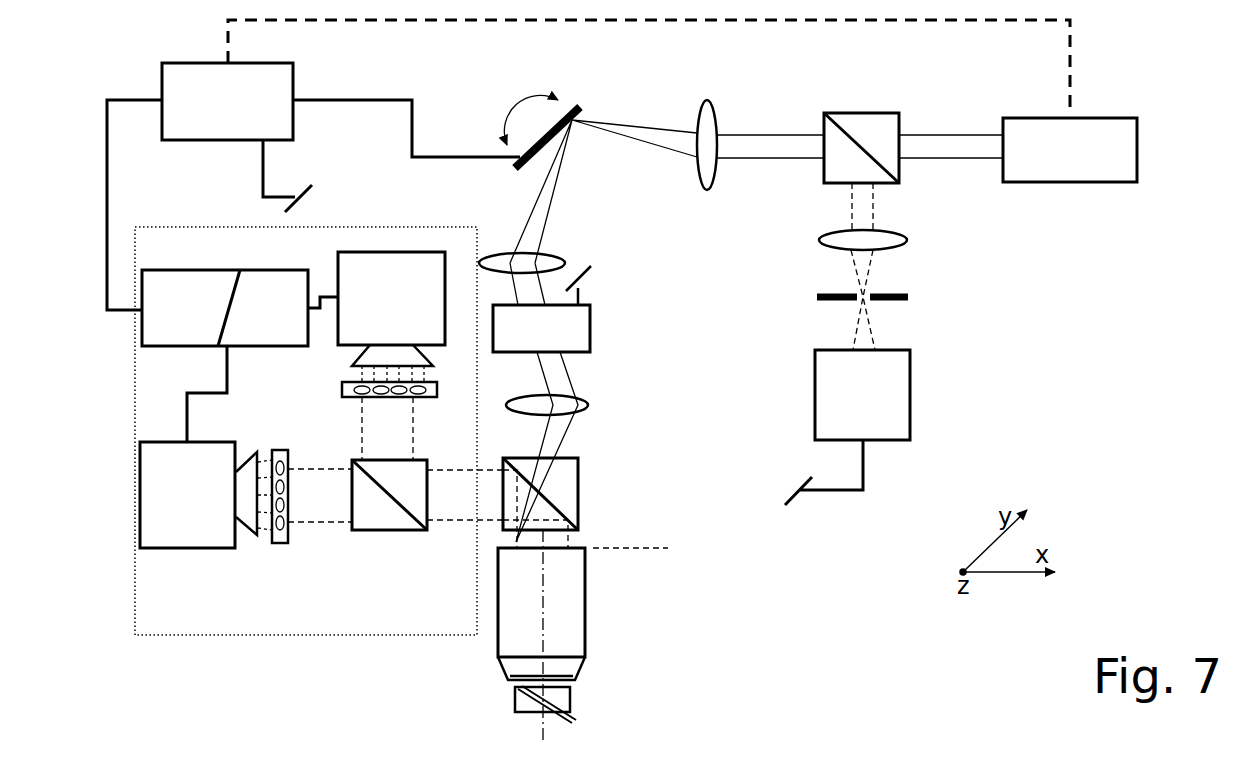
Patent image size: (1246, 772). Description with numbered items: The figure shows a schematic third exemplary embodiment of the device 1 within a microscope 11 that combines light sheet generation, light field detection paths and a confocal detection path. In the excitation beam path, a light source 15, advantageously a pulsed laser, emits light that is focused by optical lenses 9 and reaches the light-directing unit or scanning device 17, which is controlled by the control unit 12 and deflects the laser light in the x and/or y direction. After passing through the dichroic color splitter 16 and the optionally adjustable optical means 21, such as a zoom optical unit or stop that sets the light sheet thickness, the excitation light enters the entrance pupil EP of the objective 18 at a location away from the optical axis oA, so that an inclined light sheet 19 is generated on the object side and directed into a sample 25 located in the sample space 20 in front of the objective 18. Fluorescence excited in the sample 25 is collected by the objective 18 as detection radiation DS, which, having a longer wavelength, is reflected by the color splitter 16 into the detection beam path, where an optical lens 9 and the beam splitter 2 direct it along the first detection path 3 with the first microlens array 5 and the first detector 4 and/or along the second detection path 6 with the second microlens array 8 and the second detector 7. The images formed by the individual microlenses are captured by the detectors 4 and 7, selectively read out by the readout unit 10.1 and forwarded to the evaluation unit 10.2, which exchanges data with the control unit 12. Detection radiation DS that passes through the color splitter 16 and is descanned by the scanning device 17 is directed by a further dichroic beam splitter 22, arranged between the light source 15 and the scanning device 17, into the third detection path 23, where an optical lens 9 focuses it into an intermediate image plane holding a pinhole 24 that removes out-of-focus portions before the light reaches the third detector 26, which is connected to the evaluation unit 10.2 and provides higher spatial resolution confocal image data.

The device 1 is at (133, 425).
The beam splitter 2 is at (383, 531).
The first detection path 3 is at (340, 524).
The first detector 4 is at (199, 518).
The first microlens array 5 is at (277, 545).
The second detection path 6 is at (362, 455).
The second detector 7 is at (403, 325).
The second microlens array 8 is at (437, 392).
The optical lens 9 is at (560, 256).
The readout unit 10.1 is at (298, 325).
The evaluation unit 10.2 is at (212, 325).
The microscope 11 is at (438, 95).
The control unit 12 is at (251, 122).
The light source 15 is at (1093, 172).
The color splitter 16 is at (578, 488).
The scanning device 17 is at (580, 112).
The objective 18 is at (585, 596).
The light sheet 19 is at (568, 721).
The sample space 20 is at (520, 720).
The adjustable optical means 21 is at (590, 318).
The dichroic beam splitter 22 is at (872, 112).
The third detection path 23 is at (852, 207).
The pinhole 24 is at (893, 300).
The sample 25 is at (515, 702).
The third detector 26 is at (886, 417).
The detection radiation DS is at (857, 272).
The entrance pupil EP is at (645, 550).
The optical axis oA is at (543, 636).